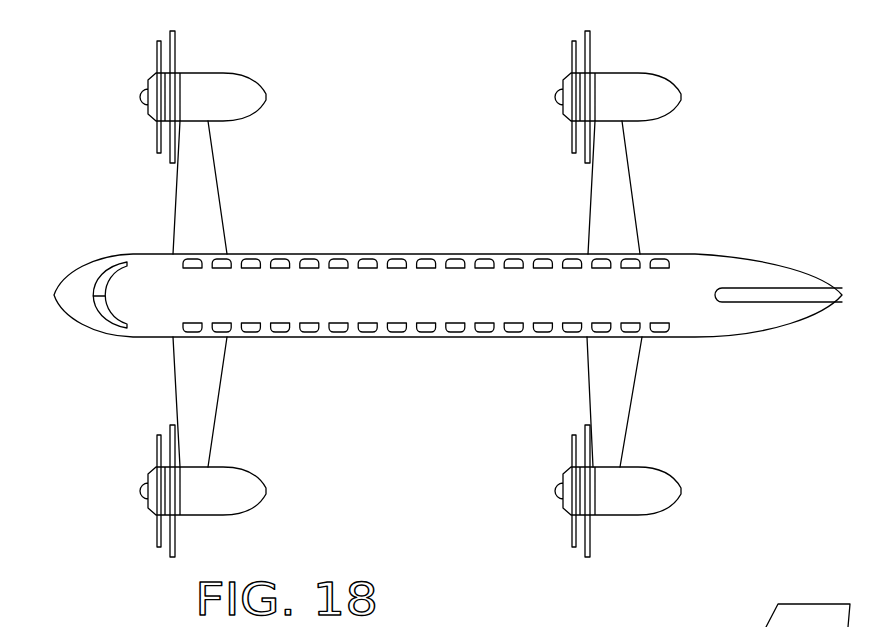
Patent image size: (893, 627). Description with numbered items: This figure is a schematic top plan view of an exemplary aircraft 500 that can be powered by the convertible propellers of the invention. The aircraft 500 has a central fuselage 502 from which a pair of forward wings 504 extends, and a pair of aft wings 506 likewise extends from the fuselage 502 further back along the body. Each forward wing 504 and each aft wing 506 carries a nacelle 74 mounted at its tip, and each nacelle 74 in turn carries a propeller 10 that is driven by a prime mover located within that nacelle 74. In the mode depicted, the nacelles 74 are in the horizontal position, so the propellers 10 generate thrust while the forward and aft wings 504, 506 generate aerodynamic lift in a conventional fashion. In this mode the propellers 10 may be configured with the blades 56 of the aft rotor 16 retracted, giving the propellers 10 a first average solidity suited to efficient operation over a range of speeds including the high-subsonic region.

The propeller 10 is at (148, 58).
The aft rotor 16 is at (171, 92).
The blades 56 is at (172, 44).
The nacelle 74 is at (218, 93).
The aircraft 500 is at (403, 92).
The fuselage 502 is at (350, 273).
The forward wings 504 is at (197, 212).
The aft wings 506 is at (613, 218).